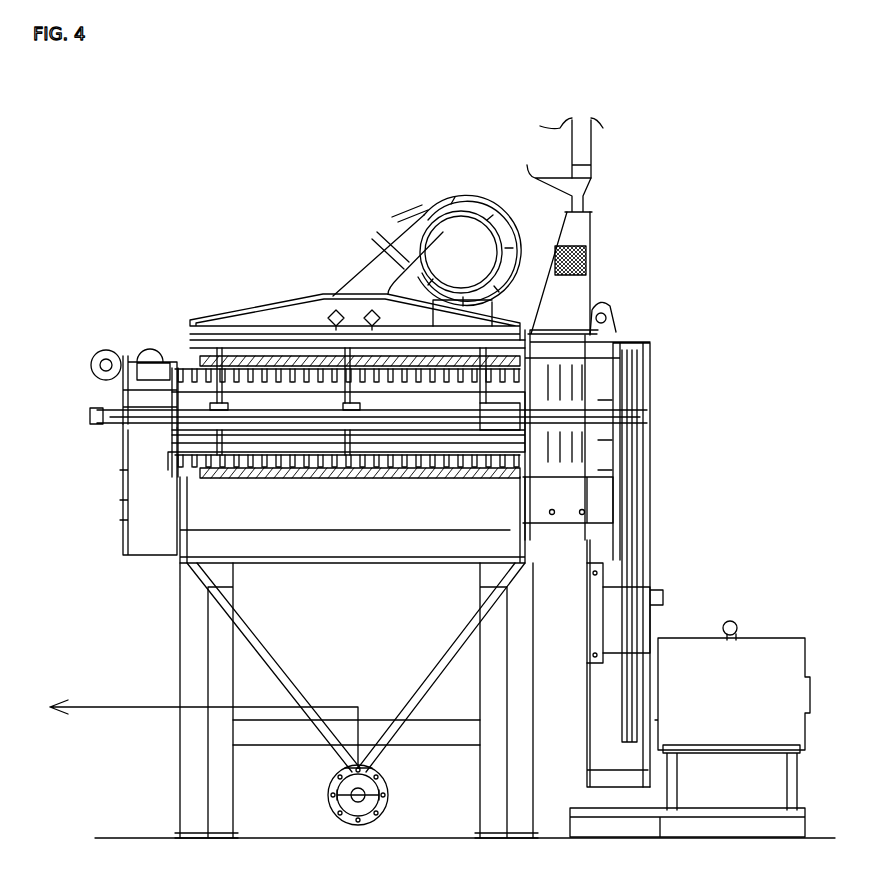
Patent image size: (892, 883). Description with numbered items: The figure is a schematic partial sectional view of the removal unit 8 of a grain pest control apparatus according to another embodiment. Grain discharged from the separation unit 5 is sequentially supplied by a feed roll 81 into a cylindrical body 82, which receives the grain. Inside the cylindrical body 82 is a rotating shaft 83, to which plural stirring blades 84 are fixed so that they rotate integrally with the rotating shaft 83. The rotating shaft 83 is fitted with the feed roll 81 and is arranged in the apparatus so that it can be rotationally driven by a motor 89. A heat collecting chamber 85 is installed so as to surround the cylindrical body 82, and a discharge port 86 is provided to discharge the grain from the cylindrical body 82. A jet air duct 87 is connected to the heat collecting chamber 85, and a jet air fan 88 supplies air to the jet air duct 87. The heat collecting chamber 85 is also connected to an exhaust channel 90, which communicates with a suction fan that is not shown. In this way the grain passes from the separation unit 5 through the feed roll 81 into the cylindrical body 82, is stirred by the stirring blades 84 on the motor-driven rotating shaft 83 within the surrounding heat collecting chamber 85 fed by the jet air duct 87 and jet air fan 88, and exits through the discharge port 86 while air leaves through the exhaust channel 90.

The removal unit 8 is at (165, 202).
The separation unit 5 is at (533, 147).
The feed roll 81 is at (598, 338).
The cylindrical body 82 is at (272, 350).
The rotating shaft 83 is at (165, 405).
The stirring blades 84 is at (222, 348).
The heat collecting chamber 85 is at (290, 642).
The discharge port 86 is at (145, 485).
The jet air duct 87 is at (313, 318).
The jet air fan 88 is at (428, 200).
The motor 89 is at (747, 665).
The exhaust channel 90 is at (130, 705).